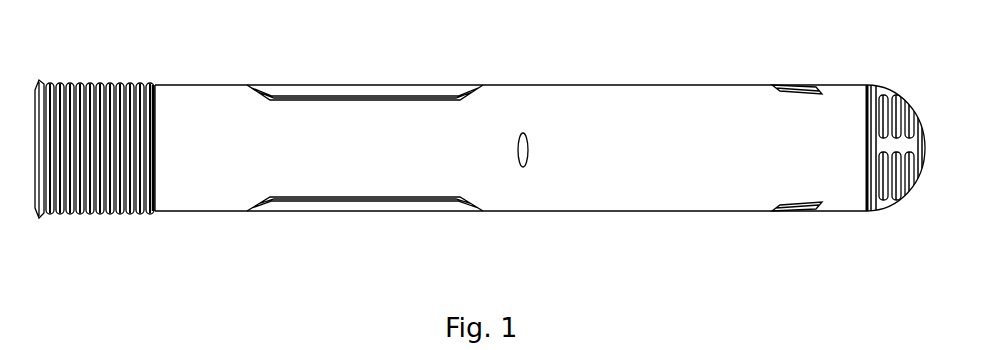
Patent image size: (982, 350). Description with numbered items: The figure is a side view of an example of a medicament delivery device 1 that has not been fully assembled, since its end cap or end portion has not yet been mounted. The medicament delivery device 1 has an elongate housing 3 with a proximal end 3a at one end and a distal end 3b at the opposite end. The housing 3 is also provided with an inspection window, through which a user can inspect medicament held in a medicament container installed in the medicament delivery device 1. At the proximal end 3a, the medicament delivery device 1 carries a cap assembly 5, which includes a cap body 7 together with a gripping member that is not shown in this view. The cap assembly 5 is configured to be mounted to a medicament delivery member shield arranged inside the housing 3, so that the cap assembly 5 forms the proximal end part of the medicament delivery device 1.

The medicament delivery device 1 is at (569, 37).
The housing 3 is at (627, 85).
The proximal end 3a is at (160, 85).
The distal end 3b is at (867, 85).
The cap assembly 5 is at (75, 84).
The cap body 7 is at (98, 222).